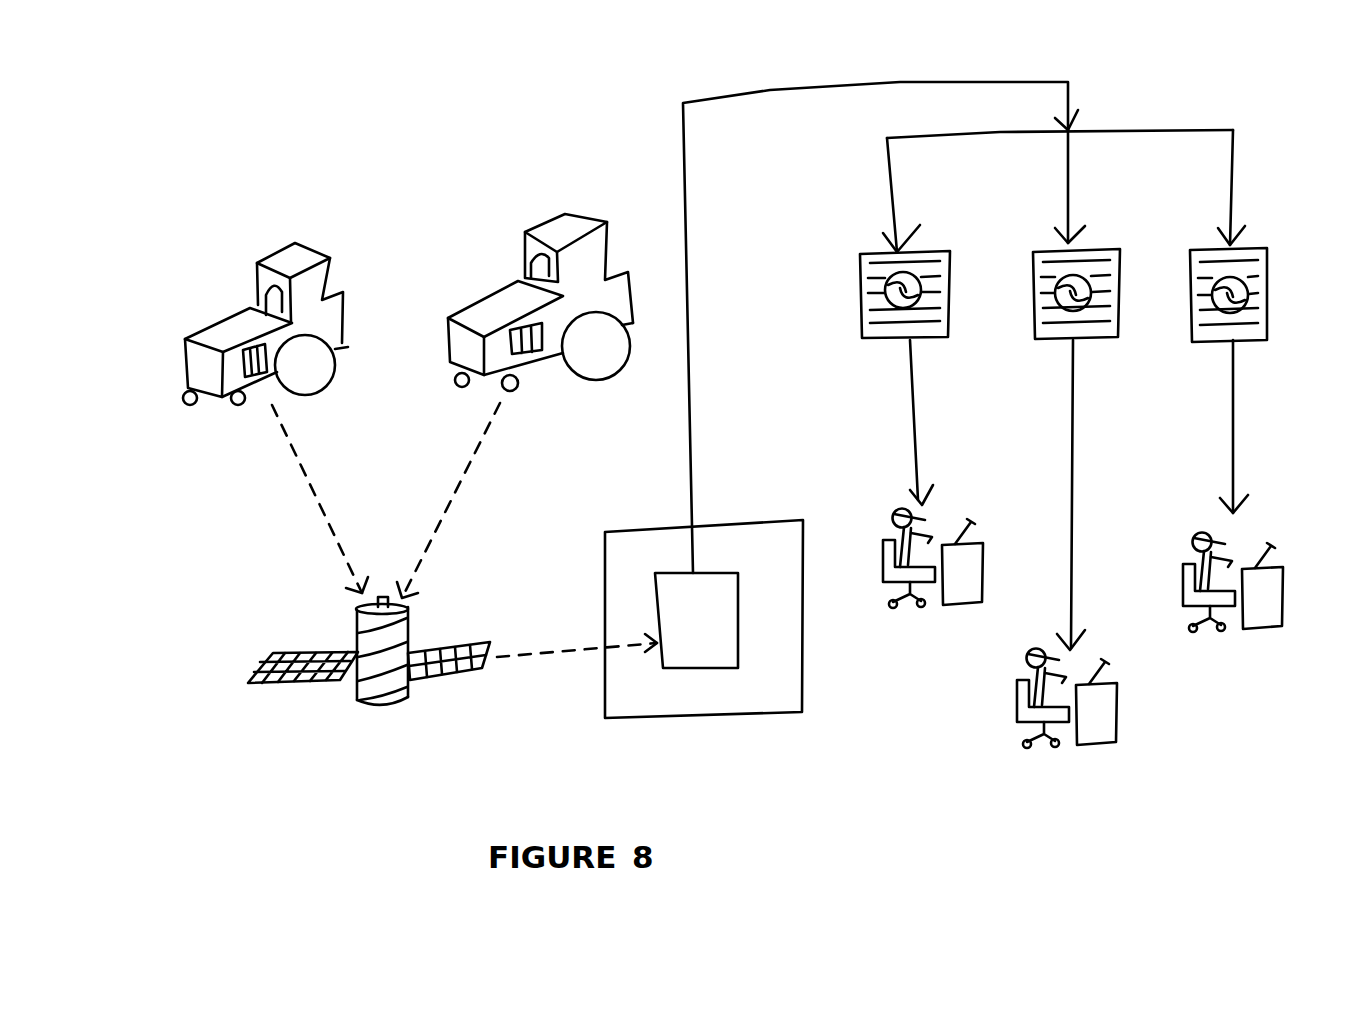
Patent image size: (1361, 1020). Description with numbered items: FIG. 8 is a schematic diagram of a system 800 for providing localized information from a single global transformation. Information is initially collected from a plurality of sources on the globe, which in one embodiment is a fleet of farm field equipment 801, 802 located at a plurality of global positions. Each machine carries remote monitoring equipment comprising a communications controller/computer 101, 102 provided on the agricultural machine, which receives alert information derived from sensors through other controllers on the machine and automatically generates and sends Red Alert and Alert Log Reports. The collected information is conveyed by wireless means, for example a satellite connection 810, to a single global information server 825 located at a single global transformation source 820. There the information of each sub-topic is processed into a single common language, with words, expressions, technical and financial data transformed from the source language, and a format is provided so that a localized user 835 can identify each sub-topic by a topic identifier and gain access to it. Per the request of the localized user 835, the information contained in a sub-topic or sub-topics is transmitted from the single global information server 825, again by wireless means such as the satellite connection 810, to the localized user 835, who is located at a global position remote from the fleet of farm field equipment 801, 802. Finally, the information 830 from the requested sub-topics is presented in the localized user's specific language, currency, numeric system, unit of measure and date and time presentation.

The system 800 is at (190, 104).
The communications controller/computer 101 is at (248, 357).
The farm field equipment 801 is at (290, 263).
The communications controller/computer 102 is at (513, 331).
The farm field equipment 802 is at (567, 225).
The satellite connection 810 is at (358, 700).
The single global transformation source 820 is at (738, 528).
The single global information server 825 is at (725, 670).
The information 830 is at (1277, 298).
The localized user 835 is at (948, 622).